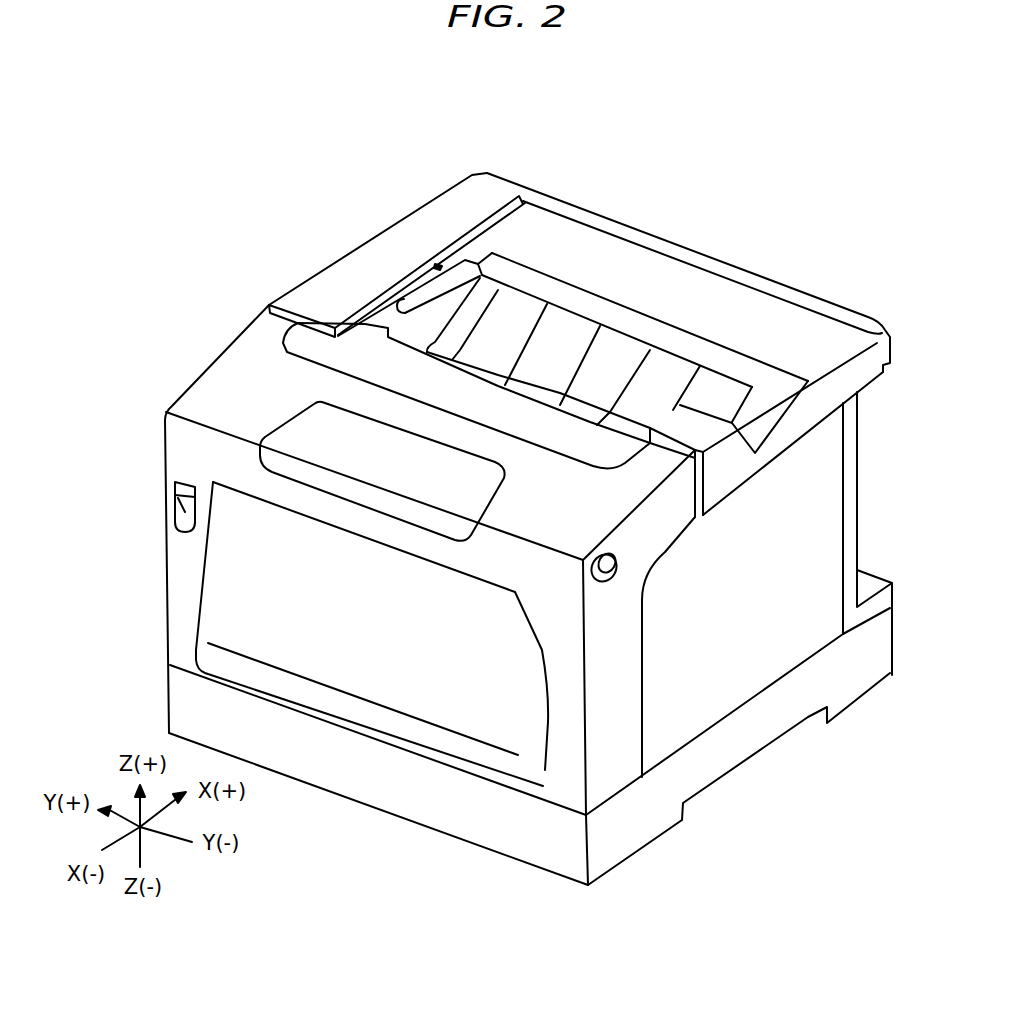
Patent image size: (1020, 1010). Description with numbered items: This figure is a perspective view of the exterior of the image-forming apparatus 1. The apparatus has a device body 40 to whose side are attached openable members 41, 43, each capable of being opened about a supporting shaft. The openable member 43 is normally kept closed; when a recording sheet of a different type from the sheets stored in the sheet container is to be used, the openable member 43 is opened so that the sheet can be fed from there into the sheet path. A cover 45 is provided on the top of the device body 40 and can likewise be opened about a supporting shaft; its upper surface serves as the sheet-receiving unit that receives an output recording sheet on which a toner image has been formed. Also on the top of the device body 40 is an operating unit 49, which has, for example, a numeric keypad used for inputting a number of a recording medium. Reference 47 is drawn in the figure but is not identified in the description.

The image-forming apparatus 1 is at (586, 189).
The device body 40 is at (505, 184).
The openable member 41 is at (245, 363).
The openable member 43 is at (228, 585).
The cover 45 is at (803, 320).
The sheet discharge tray 47 is at (573, 335).
The operating unit 49 is at (477, 491).